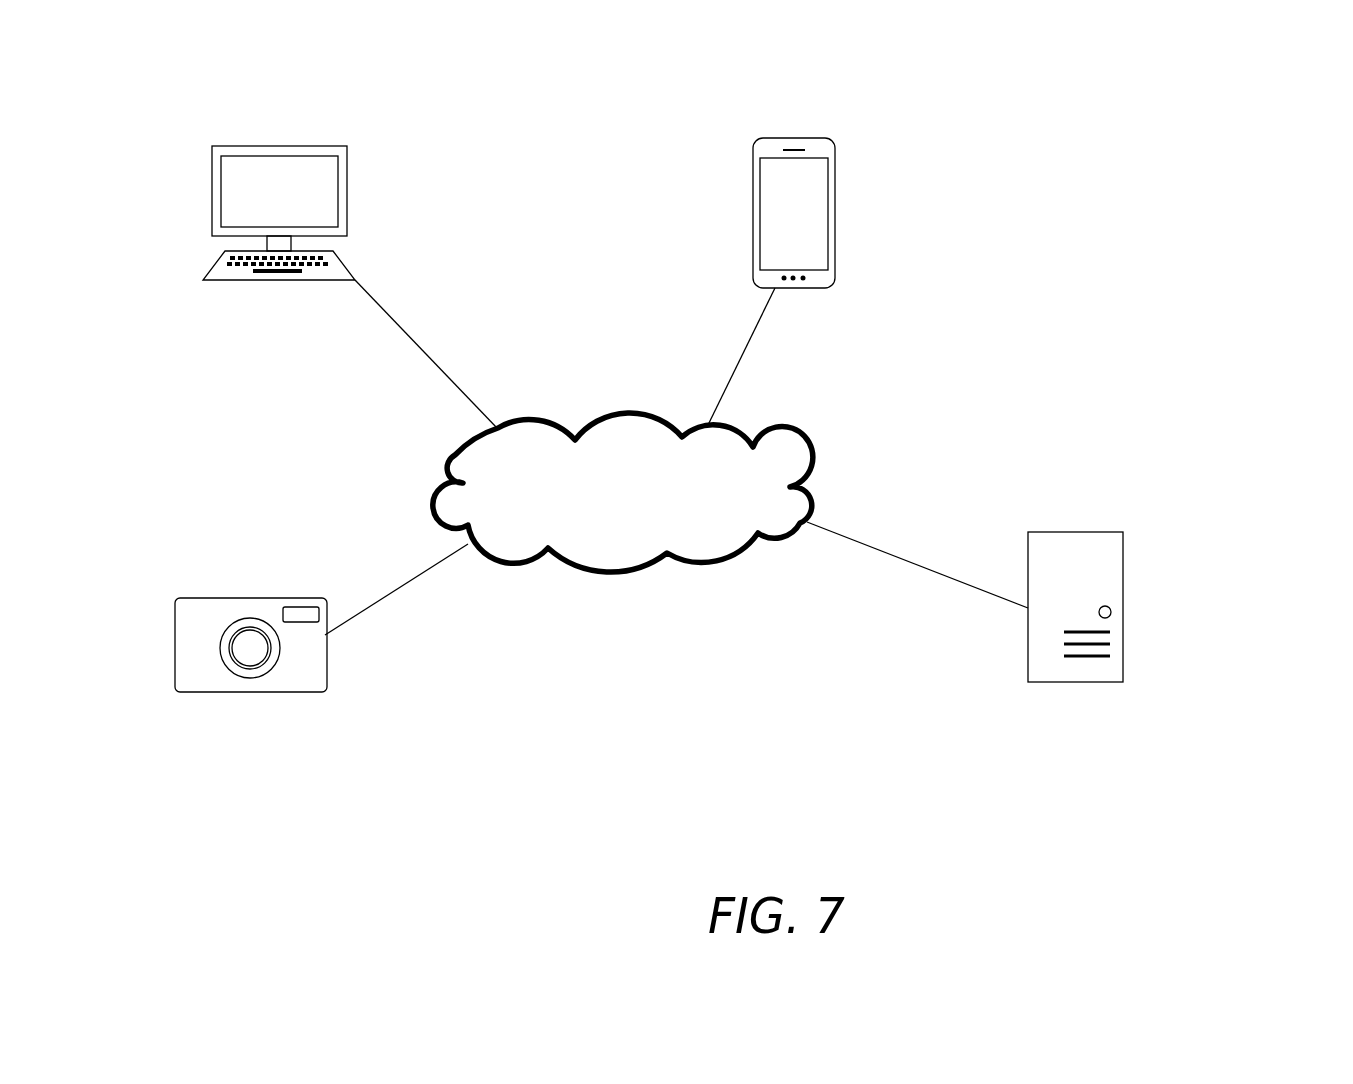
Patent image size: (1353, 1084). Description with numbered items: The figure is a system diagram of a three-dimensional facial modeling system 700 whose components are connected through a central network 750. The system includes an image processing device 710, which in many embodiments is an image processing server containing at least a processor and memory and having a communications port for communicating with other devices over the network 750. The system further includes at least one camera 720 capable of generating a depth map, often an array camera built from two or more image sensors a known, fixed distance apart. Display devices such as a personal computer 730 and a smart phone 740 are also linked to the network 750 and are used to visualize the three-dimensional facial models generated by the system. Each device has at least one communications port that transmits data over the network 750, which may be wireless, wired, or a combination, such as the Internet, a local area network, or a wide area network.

The 3D facial modeling system 700 is at (1127, 232).
The image processing device 710 is at (1123, 532).
The camera 720 is at (240, 597).
The personal computer 730 is at (347, 154).
The smart phone 740 is at (832, 141).
The network 750 is at (663, 558).